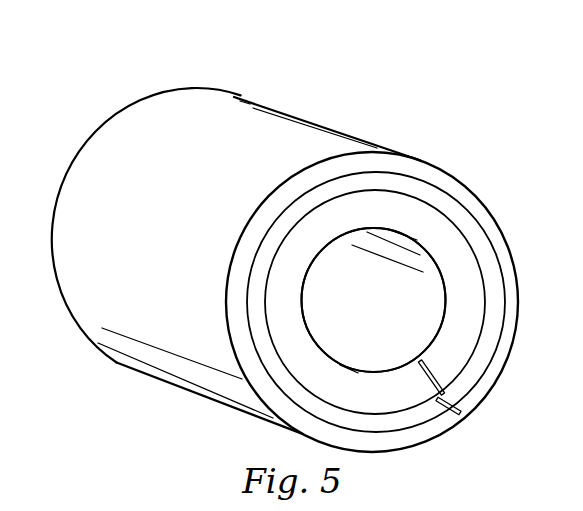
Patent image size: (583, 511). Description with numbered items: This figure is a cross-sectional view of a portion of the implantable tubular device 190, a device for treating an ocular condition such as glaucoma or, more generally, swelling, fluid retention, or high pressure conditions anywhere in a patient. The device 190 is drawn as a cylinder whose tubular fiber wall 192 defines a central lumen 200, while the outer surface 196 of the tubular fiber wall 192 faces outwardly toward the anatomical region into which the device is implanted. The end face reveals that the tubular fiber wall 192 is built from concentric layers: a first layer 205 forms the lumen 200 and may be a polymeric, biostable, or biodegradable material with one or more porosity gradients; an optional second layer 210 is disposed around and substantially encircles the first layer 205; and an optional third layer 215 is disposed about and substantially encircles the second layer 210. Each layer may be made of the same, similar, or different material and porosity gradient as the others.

The implantable tubular device 190 is at (387, 86).
The tubular fiber wall 192 is at (437, 405).
The outer surface 196 is at (92, 339).
The lumen 200 is at (396, 300).
The first layer 205 is at (290, 326).
The second layer 210 is at (412, 188).
The third layer 215 is at (457, 190).